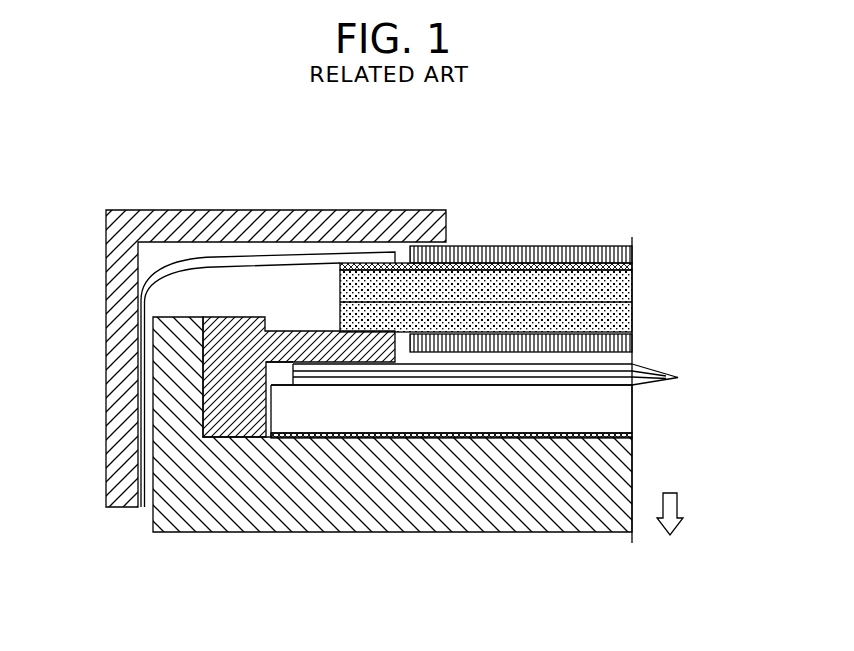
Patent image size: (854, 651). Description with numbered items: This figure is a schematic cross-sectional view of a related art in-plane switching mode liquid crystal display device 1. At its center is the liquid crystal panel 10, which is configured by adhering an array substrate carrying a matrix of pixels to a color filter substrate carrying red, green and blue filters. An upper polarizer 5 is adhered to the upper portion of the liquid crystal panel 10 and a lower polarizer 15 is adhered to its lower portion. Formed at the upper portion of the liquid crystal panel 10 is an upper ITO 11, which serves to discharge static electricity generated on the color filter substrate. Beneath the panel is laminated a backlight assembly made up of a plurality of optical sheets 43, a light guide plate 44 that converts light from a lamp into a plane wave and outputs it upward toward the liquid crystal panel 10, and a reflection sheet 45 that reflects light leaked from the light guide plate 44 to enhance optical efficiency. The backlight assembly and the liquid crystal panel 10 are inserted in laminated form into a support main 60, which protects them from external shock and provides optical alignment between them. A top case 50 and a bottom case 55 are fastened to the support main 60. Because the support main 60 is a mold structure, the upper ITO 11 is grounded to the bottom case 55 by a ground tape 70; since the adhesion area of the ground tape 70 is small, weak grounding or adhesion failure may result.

The in-plane switching mode liquid crystal display device 1 is at (672, 203).
The upper polarizer 5 is at (627, 256).
The liquid crystal panel 10 is at (638, 273).
The upper ITO 11 is at (632, 266).
The lower polarizer 15 is at (630, 343).
The optical sheets 43 is at (500, 377).
The light guide plate 44 is at (625, 410).
The reflection sheet 45 is at (630, 438).
The top case 50 is at (113, 314).
The bottom case 55 is at (173, 470).
The support main 60 is at (213, 410).
The ground tape 70 is at (143, 364).